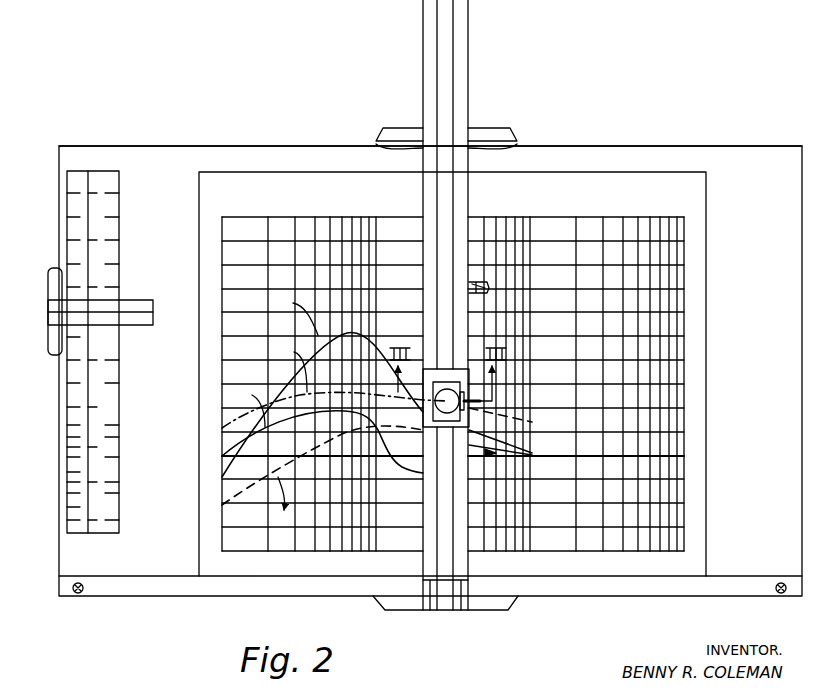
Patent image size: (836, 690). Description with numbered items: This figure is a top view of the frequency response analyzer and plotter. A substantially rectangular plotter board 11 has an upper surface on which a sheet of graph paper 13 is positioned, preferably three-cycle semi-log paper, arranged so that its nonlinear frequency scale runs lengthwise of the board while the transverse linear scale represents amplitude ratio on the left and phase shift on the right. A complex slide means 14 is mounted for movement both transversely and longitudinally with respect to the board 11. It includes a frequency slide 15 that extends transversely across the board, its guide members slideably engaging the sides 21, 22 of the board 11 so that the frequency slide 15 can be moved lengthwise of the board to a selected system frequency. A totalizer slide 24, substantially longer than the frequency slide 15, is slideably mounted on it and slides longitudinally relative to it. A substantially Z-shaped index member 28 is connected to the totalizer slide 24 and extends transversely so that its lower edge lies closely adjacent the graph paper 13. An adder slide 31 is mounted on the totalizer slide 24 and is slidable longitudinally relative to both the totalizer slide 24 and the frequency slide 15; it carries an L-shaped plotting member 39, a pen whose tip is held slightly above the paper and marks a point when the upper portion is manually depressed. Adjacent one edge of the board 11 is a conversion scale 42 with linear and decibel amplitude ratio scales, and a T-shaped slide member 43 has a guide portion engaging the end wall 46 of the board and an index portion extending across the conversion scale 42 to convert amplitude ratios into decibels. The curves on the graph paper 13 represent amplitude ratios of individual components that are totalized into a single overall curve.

The plotter board 11 is at (738, 158).
The graph paper 13 is at (213, 175).
The slide means 14 is at (418, 101).
The frequency slide 15 is at (442, 600).
The side of the board 21 is at (552, 588).
The side of the board 22 is at (566, 148).
The totalizer slide 24 is at (462, 102).
The index member 28 is at (484, 288).
The adder slide 31 is at (459, 377).
The plotting member 39 is at (478, 395).
The conversion scale 42 is at (82, 415).
The T-shaped slide member 43 is at (48, 290).
The end wall 46 is at (60, 565).